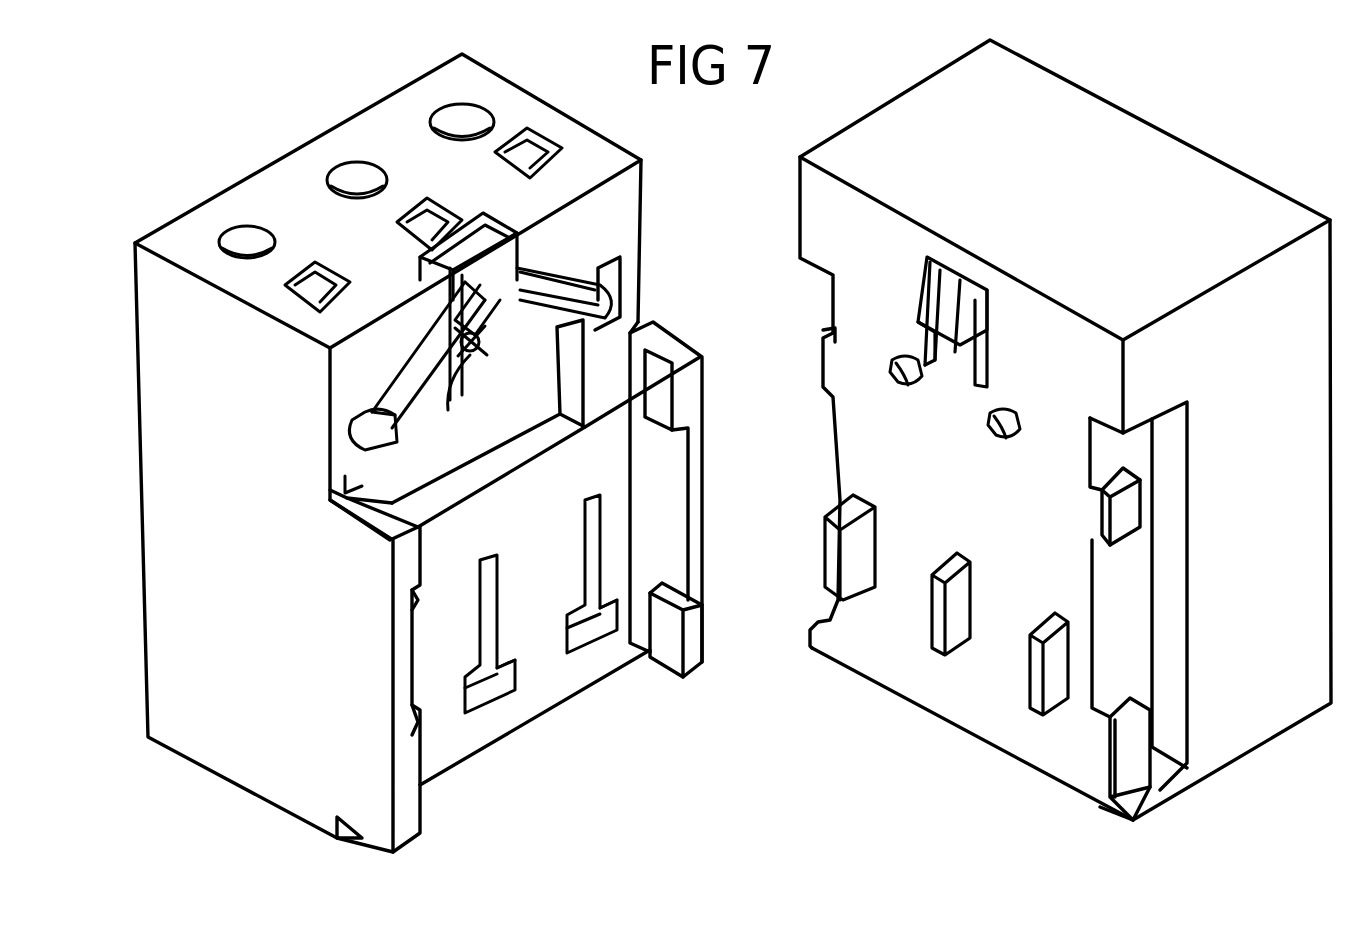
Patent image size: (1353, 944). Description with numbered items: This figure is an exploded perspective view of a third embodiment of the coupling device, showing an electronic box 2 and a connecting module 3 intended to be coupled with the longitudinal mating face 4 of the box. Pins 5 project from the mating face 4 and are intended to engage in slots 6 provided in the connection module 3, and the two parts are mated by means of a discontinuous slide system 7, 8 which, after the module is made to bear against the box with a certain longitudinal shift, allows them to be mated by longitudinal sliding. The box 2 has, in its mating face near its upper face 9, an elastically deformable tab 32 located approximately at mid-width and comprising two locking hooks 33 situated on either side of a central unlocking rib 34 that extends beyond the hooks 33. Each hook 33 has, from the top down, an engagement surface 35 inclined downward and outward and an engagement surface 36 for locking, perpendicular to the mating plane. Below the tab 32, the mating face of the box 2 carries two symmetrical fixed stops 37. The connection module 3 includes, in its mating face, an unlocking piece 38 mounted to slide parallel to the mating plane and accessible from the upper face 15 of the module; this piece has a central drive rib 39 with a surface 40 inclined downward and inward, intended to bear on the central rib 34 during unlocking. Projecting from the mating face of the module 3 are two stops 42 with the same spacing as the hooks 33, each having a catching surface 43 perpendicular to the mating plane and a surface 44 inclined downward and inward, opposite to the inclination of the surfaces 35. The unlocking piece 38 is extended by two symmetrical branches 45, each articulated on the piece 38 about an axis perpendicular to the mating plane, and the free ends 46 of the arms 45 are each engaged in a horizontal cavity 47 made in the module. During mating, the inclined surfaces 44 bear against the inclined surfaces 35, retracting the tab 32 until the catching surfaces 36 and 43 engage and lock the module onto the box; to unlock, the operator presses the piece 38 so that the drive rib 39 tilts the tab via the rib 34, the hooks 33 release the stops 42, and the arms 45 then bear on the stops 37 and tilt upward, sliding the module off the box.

The electronic box 2 is at (866, 105).
The connecting module 3 is at (575, 100).
The longitudinal mating face 4 is at (912, 648).
The pins 5 is at (957, 640).
The slots 6 is at (590, 560).
The discontinuous slide system 7 is at (672, 558).
The discontinuous slide system 8 is at (1122, 752).
The upper face 9 is at (852, 146).
The upper face 15 is at (612, 150).
The elastically deformable tab 32 is at (958, 285).
The locking hooks 33 is at (990, 333).
The central unlocking rib 34 is at (932, 336).
The engagement surface 35 is at (985, 305).
The engagement surface for locking 36 is at (965, 355).
The fixed stops 37 is at (900, 385).
The unlocking piece 38 is at (428, 260).
The central drive rib 39 is at (455, 318).
The inclined surface 40 is at (455, 395).
The stops 42 is at (520, 336).
The catching surface 43 is at (500, 320).
The inclined surface 44 is at (485, 360).
The branches 45 is at (390, 440).
The free ends 46 is at (590, 306).
The cavity 47 is at (340, 500).